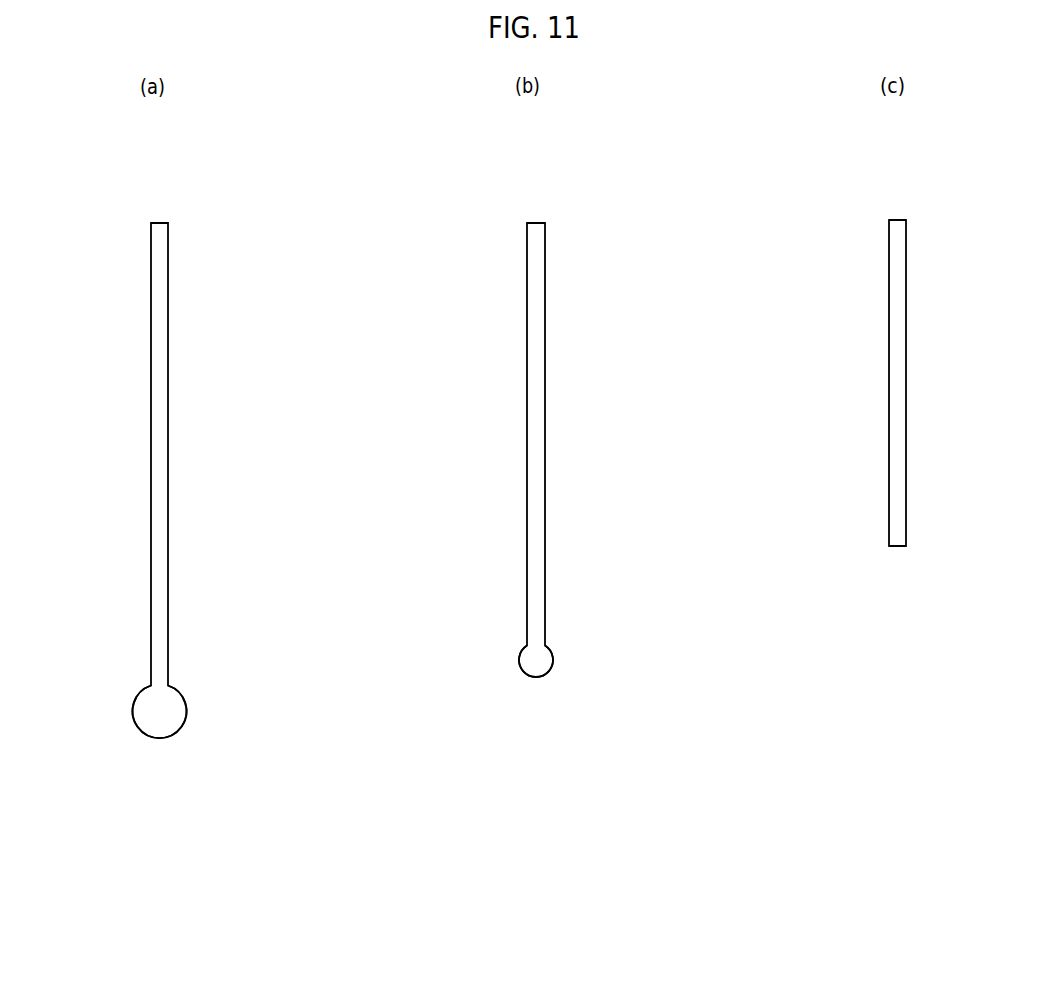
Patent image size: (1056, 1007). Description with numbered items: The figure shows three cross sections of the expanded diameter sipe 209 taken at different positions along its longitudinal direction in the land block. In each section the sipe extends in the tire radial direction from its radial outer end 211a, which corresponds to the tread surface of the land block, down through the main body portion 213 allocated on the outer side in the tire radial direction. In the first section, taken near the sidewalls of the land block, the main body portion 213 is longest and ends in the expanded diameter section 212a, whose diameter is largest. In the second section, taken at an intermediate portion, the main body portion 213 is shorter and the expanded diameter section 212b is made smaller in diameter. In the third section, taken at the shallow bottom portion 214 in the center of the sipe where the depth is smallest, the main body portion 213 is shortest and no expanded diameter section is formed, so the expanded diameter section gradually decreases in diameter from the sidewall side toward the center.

The expanded diameter sipe 209 is at (533, 447).
The radial outer end 211a is at (160, 222).
The main body portion 213 is at (162, 441).
The expanded diameter section 212a is at (163, 725).
The expanded diameter section 212b is at (536, 665).
The shallow bottom portion 214 is at (898, 548).